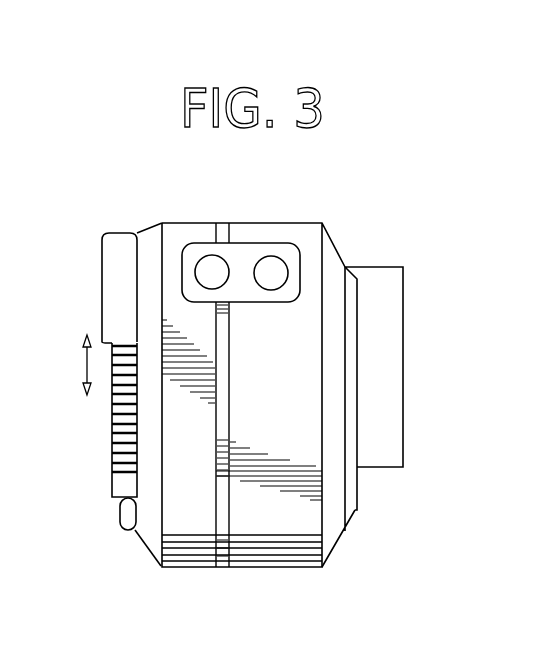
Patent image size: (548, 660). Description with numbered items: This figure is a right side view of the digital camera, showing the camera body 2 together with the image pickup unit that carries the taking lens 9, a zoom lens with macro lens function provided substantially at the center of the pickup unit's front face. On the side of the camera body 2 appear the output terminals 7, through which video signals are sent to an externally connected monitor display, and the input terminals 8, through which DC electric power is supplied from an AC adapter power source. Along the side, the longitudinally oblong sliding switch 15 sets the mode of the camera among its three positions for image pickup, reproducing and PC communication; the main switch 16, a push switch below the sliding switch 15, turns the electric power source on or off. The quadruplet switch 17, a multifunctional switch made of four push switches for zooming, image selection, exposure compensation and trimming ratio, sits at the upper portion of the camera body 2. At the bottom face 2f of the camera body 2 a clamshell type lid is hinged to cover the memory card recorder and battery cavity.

The camera body 2 is at (252, 223).
The bottom face 2f is at (190, 567).
The output terminals 7 is at (272, 256).
The input terminals 8 is at (206, 255).
The taking lens 9 is at (404, 349).
The sliding switch 15 is at (112, 407).
The main switch 16 is at (121, 521).
The quadruplet switch 17 is at (102, 306).